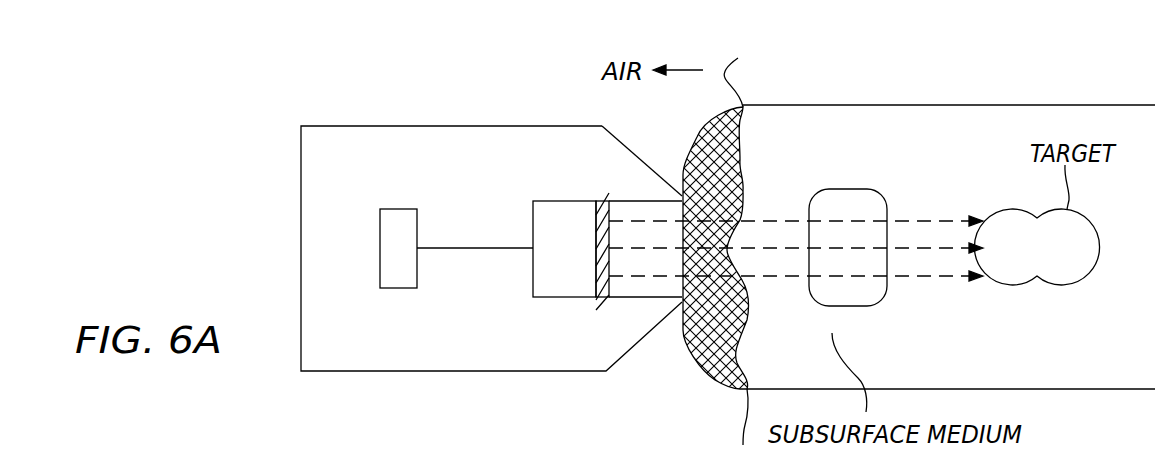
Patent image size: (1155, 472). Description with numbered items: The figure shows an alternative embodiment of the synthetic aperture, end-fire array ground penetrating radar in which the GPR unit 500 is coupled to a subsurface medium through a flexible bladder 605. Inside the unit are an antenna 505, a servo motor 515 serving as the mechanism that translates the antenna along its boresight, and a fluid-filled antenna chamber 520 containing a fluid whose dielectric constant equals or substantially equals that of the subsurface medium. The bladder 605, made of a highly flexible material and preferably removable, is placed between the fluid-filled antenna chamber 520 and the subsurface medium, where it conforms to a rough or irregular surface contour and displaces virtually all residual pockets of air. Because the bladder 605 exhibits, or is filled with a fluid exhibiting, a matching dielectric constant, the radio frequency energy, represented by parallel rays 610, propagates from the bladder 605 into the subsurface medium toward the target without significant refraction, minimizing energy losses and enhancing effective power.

The GPR unit 500 is at (369, 126).
The antenna 505 is at (603, 201).
The servo motor 515 is at (392, 288).
The fluid-filled antenna chamber 520 is at (535, 201).
The bladder 605 is at (693, 367).
The parallel rays 610 is at (843, 203).